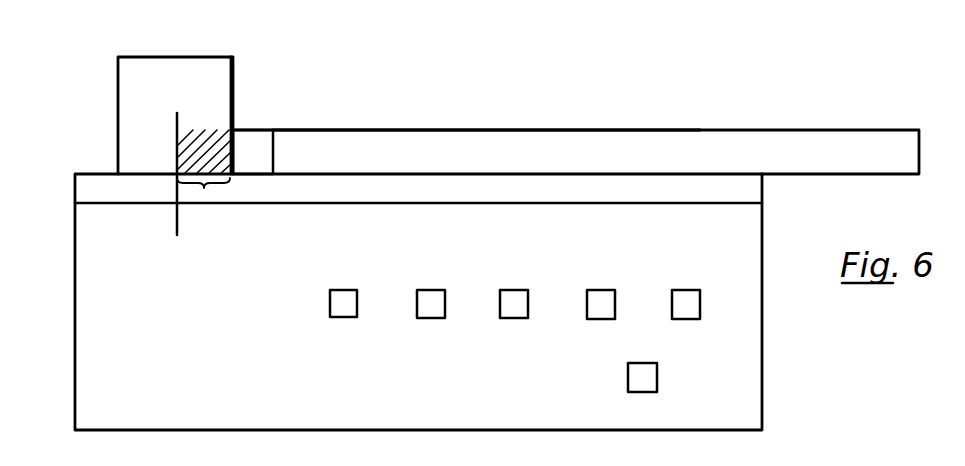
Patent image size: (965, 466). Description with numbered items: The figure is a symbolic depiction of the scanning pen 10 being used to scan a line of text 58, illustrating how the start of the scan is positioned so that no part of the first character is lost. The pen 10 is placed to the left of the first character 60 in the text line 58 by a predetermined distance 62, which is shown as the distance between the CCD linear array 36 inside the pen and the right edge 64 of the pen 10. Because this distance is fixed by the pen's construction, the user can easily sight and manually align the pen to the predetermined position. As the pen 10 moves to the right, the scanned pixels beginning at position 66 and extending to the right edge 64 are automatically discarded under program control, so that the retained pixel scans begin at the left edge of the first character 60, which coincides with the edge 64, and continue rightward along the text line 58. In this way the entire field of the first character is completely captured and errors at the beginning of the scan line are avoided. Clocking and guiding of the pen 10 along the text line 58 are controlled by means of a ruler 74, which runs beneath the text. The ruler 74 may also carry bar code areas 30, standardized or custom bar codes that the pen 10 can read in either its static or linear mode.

The scanning pen 10 is at (223, 80).
The bar code areas 30 is at (673, 292).
The CCD linear array 36 is at (177, 157).
The text line 58 is at (807, 148).
The first character 60 is at (270, 127).
The predetermined distance 62 is at (204, 188).
The right edge 64 is at (237, 125).
The position 66 is at (176, 221).
The ruler 74 is at (753, 194).